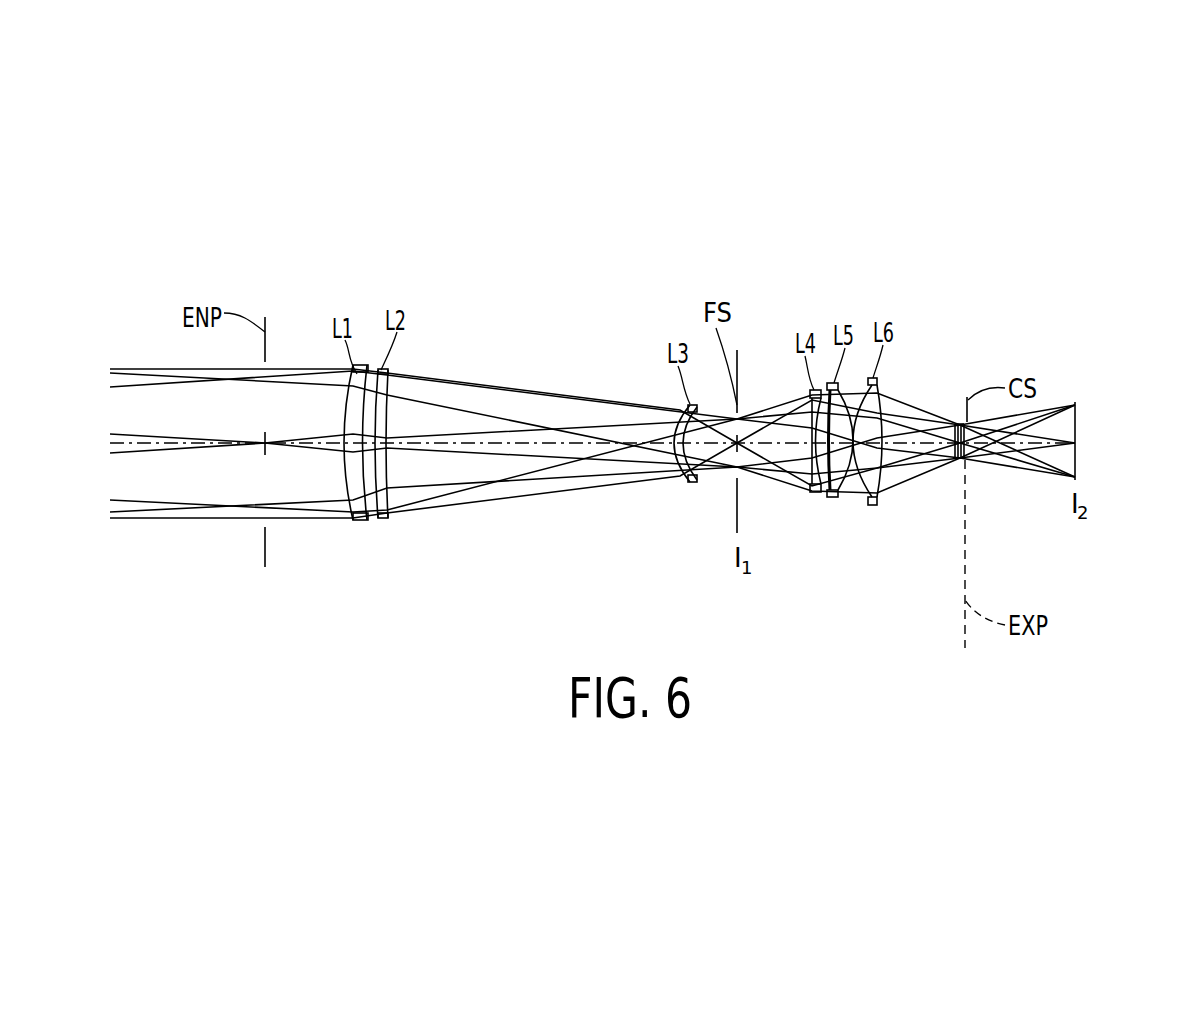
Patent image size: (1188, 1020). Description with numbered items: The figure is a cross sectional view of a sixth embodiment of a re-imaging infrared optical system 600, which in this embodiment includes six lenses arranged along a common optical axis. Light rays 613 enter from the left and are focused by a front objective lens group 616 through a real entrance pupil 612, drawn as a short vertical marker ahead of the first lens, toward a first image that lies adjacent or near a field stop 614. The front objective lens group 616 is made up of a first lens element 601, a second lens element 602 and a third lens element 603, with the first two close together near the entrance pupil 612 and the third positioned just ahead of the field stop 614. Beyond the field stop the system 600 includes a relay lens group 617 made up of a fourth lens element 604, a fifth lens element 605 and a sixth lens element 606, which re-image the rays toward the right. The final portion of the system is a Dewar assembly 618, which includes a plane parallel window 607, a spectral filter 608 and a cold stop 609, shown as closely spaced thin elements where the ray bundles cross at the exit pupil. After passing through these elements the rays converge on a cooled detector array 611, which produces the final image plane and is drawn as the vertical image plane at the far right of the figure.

The re-imaging infrared optical system 600 is at (638, 244).
The lens element L1 601 is at (355, 516).
The lens element L2 602 is at (385, 517).
The lens element L3 603 is at (688, 482).
The lens element L4 604 is at (815, 492).
The lens element L5 605 is at (833, 497).
The lens element L6 606 is at (872, 505).
The plane parallel window 607 is at (955, 460).
The spectral filter 608 is at (959, 462).
The cold stop 609 is at (966, 460).
The cooled detector array 611 is at (1078, 463).
The real entrance pupil 612 is at (265, 557).
The light rays 613 is at (168, 452).
The field stop 614 is at (737, 520).
The front objective lens group 616 is at (389, 249).
The relay lens group 617 is at (756, 267).
The Dewar assembly 618 is at (1031, 344).